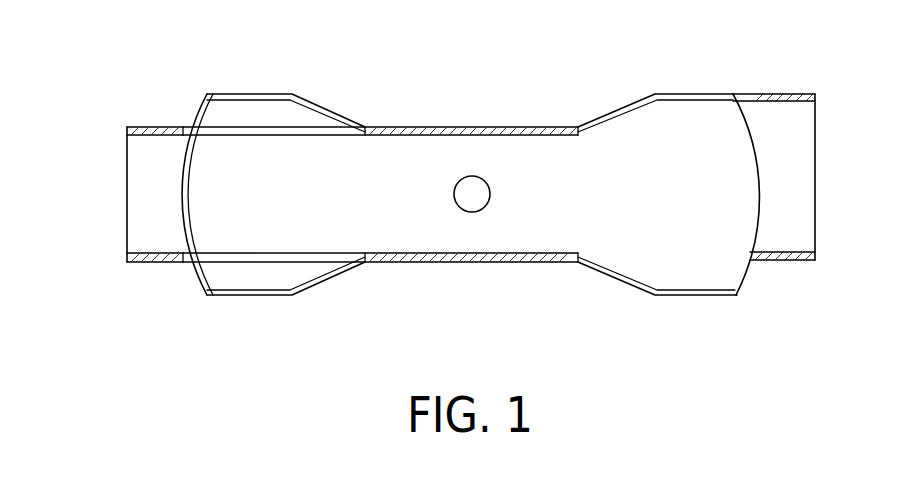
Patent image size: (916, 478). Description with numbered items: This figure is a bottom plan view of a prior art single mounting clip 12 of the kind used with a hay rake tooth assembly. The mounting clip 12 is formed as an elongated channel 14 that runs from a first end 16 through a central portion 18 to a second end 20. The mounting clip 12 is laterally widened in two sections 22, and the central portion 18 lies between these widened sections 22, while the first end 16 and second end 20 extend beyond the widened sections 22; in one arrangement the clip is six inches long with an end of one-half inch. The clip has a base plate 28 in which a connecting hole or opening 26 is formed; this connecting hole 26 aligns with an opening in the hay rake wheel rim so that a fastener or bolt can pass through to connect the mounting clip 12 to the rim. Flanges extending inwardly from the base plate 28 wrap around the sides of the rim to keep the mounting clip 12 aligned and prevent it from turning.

The mounting clip 12 is at (580, 47).
The elongated channel 14 is at (425, 150).
The first end 16 is at (816, 178).
The central portion 18 is at (412, 232).
The second end 20 is at (127, 193).
The widened sections 22 is at (247, 296).
The connecting hole 26 is at (490, 177).
The base plate 28 is at (560, 205).